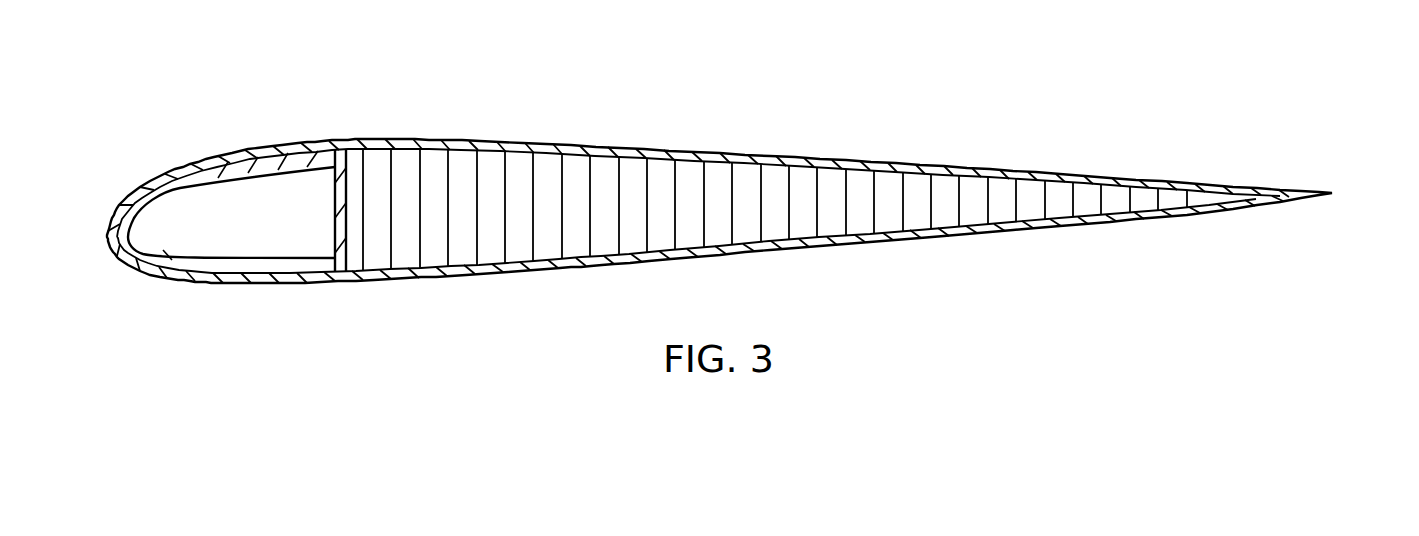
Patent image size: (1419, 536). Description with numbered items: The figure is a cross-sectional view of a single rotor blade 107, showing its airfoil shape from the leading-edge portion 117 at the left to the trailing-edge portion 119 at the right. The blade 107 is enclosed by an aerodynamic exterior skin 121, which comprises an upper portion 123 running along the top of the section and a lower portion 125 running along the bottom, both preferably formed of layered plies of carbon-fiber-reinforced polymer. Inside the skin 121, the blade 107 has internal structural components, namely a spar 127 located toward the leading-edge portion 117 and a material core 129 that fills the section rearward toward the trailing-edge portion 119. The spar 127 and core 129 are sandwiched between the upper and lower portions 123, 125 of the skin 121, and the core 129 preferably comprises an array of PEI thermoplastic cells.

The blade 107 is at (163, 98).
The leading-edge portion 117 is at (104, 240).
The trailing-edge portion 119 is at (1335, 193).
The aerodynamic exterior skin 121 is at (228, 284).
The upper portion 123 is at (577, 146).
The lower portion 125 is at (605, 268).
The spar 127 is at (252, 183).
The material core 129 is at (510, 245).